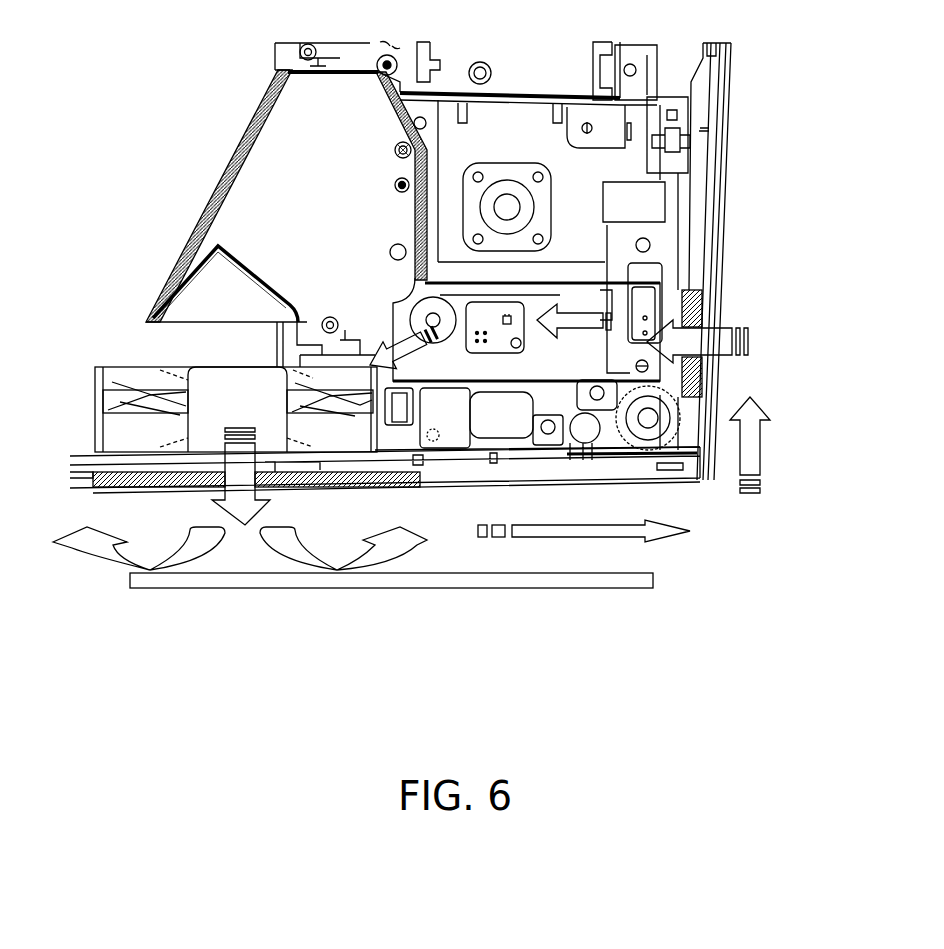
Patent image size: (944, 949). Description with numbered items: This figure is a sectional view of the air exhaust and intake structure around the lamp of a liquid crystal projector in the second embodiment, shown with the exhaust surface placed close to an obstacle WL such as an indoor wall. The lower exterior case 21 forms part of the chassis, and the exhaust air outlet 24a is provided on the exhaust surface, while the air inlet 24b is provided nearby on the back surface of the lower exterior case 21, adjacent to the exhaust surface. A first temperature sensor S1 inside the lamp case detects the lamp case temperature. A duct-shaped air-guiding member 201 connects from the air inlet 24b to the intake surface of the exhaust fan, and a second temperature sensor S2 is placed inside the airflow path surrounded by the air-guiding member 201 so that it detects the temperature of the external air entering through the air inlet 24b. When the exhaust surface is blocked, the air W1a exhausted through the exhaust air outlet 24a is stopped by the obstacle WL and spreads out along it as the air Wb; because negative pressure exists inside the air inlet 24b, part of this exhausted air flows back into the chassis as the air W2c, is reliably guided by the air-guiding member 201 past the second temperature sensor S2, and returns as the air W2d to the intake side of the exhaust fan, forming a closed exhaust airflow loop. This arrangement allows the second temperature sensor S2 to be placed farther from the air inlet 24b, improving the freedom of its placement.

The lower exterior case 21 is at (732, 116).
The air-guiding member 201 is at (520, 383).
The exhaust air outlet 24a is at (147, 478).
The air inlet 24b is at (700, 378).
The first temperature sensor S1 is at (508, 205).
The second temperature sensor S2 is at (507, 324).
The exhausted air W1a is at (245, 503).
The inflowing air W2c is at (710, 338).
The returning air W2d is at (387, 347).
The spreading air Wb is at (537, 530).
The obstacle WL is at (419, 589).